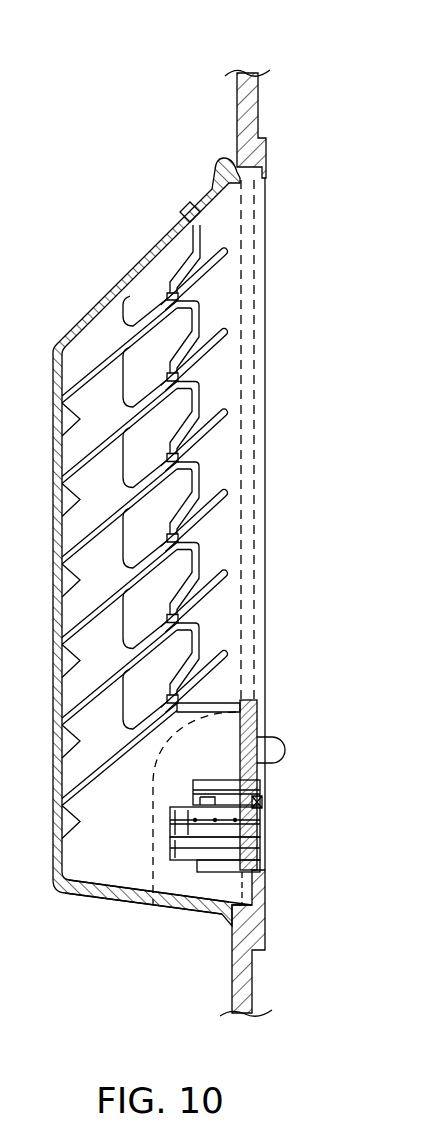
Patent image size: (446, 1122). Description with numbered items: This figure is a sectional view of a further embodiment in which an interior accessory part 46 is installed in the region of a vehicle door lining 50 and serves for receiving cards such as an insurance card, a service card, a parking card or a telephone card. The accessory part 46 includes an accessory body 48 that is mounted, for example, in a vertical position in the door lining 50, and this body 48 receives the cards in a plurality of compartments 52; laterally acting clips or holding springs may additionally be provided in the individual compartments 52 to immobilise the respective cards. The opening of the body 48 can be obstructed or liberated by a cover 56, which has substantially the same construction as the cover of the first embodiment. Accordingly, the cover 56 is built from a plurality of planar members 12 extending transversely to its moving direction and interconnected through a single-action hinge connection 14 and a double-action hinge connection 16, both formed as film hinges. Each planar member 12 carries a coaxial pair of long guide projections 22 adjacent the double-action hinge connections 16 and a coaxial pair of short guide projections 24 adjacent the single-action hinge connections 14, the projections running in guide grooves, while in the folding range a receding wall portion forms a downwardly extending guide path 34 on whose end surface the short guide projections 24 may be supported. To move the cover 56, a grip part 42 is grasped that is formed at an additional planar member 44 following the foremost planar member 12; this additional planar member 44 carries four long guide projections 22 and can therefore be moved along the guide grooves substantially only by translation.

The planar member 12 is at (229, 782).
The hinge connection 14 is at (176, 843).
The hinge connection 16 is at (261, 858).
The long guide projections 22 is at (260, 800).
The short guide projections 24 is at (177, 858).
The guide path 34 is at (152, 796).
The grip part 42 is at (274, 749).
The additional planar member 44 is at (246, 708).
The interior accessory part 46 is at (96, 247).
The accessory body 48 is at (76, 893).
The door lining 50 is at (238, 118).
The compartments 52 is at (183, 328).
The cover 56 is at (285, 570).